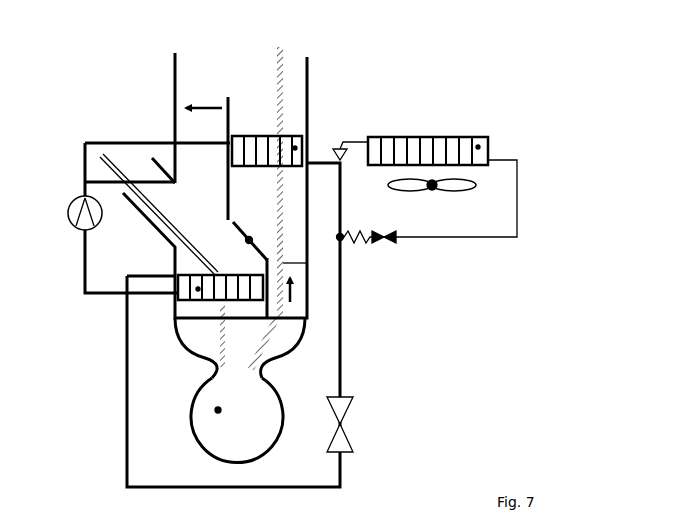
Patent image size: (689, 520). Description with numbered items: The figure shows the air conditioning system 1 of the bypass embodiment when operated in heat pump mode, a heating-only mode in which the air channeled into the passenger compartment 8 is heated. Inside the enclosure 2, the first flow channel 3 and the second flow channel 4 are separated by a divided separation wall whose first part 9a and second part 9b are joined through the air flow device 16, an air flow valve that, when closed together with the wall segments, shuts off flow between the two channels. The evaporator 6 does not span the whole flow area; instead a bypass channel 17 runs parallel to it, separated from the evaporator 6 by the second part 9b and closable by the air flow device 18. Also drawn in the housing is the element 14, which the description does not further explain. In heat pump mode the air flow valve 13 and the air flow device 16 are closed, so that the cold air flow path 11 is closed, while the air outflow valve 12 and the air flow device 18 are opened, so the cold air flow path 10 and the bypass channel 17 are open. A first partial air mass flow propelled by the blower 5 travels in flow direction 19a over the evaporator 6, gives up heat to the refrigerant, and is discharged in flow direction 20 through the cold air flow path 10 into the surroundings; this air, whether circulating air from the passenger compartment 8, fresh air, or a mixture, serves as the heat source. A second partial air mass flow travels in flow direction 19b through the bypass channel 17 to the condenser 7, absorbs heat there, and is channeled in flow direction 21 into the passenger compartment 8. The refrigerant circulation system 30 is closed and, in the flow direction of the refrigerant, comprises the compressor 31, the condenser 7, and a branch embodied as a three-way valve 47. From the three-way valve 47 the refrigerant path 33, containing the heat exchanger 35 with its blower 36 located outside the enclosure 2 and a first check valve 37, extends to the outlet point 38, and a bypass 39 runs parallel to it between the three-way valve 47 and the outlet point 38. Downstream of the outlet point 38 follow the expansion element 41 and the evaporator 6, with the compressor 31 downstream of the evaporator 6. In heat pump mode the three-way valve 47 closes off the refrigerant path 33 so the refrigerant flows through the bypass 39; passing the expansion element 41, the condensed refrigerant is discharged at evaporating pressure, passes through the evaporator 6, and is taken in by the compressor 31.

The air conditioning system 1 is at (554, 82).
The enclosure 2 is at (173, 63).
The first flow channel 3 is at (170, 127).
The second flow channel 4 is at (310, 80).
The blower 5 is at (220, 411).
The evaporator 6 is at (186, 301).
The condenser 7 is at (307, 150).
The passenger compartment 8 is at (236, 61).
The first part of the separation wall 9a is at (228, 192).
The second part of the separation wall 9b is at (263, 303).
The cold air flow path 10 is at (138, 167).
The cold air flow path 11 is at (216, 167).
The air outflow valve 12 is at (85, 182).
The air flow valve 13 is at (173, 100).
The heat exchanger 14 is at (265, 123).
The air flow device 16 is at (246, 240).
The bypass channel 17 is at (295, 273).
The air flow device 18 is at (308, 318).
The flow direction 19a is at (220, 330).
The flow direction 19b is at (262, 352).
The flow direction 20 is at (104, 155).
The flow direction 21 is at (284, 50).
The refrigerant circulation system 30 is at (346, 292).
The compressor 31 is at (84, 224).
The refrigerant path 33 is at (518, 186).
The heat exchanger 35 is at (479, 141).
The blower 36 is at (431, 190).
The first check valve 37 is at (386, 241).
The outlet point 38 is at (346, 242).
The bypass 39 is at (341, 192).
The expansion element 41 is at (345, 428).
The three-way valve 47 is at (353, 166).